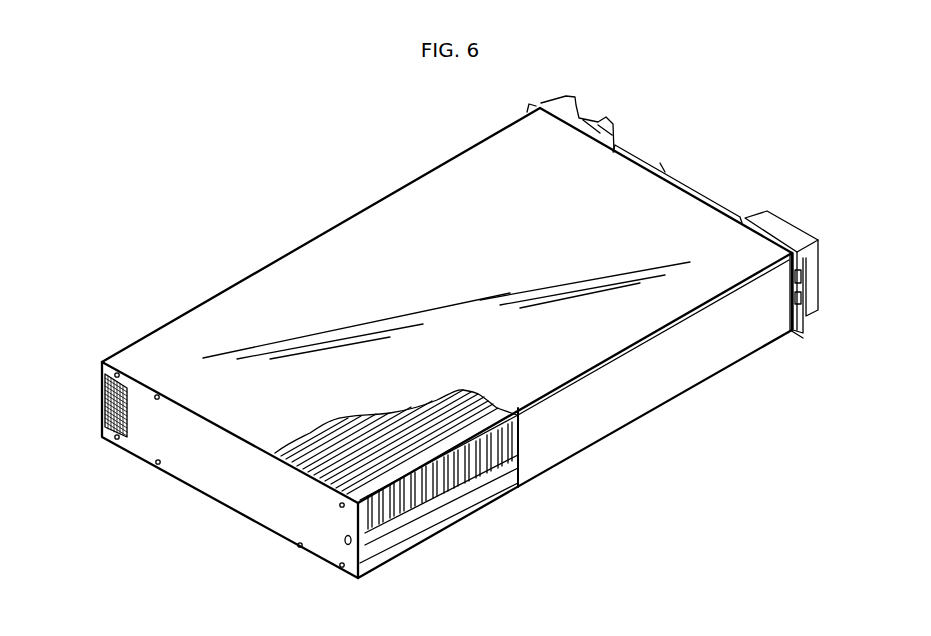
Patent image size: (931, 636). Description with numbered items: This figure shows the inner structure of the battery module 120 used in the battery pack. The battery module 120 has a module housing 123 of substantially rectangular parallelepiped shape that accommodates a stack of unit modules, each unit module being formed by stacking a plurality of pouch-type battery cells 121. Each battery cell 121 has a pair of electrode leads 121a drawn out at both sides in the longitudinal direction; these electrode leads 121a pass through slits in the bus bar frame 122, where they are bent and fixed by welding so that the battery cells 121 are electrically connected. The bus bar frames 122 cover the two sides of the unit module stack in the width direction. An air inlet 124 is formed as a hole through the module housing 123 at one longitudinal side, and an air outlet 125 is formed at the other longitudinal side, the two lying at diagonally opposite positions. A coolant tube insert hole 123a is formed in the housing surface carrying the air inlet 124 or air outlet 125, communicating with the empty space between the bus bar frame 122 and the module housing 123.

The battery module 120 is at (285, 210).
The battery cell 121 is at (305, 440).
The electrode lead 121a is at (463, 470).
The bus bar frame 122 is at (487, 412).
The module housing 123 is at (197, 305).
The coolant tube insert hole 123a is at (345, 544).
The air inlet 124 is at (800, 228).
The air outlet 125 is at (105, 402).